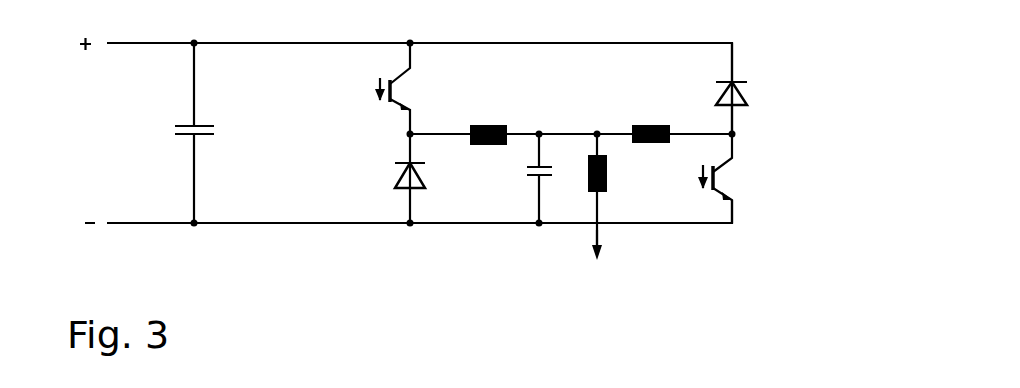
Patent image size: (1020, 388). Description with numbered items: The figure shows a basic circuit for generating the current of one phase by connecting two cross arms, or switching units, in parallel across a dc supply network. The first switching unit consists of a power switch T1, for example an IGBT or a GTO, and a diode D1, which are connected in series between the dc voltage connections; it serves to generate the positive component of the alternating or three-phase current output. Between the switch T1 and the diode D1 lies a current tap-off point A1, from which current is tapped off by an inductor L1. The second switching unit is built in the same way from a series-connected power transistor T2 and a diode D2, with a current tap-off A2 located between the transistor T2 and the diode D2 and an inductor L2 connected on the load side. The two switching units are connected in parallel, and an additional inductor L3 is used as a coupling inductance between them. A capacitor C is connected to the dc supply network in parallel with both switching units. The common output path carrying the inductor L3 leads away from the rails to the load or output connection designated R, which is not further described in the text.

The capacitor C is at (182, 133).
The power switch T1 is at (374, 88).
The diode D1 is at (390, 178).
The inductor L1 is at (488, 152).
The inductor L2 is at (651, 116).
The additional inductor L3 is at (613, 197).
The load / output terminal R is at (597, 266).
The diode D2 is at (751, 88).
The power transistor T2 is at (735, 178).
The current tap-off point A1 is at (393, 135).
The current tap-off A2 is at (745, 134).